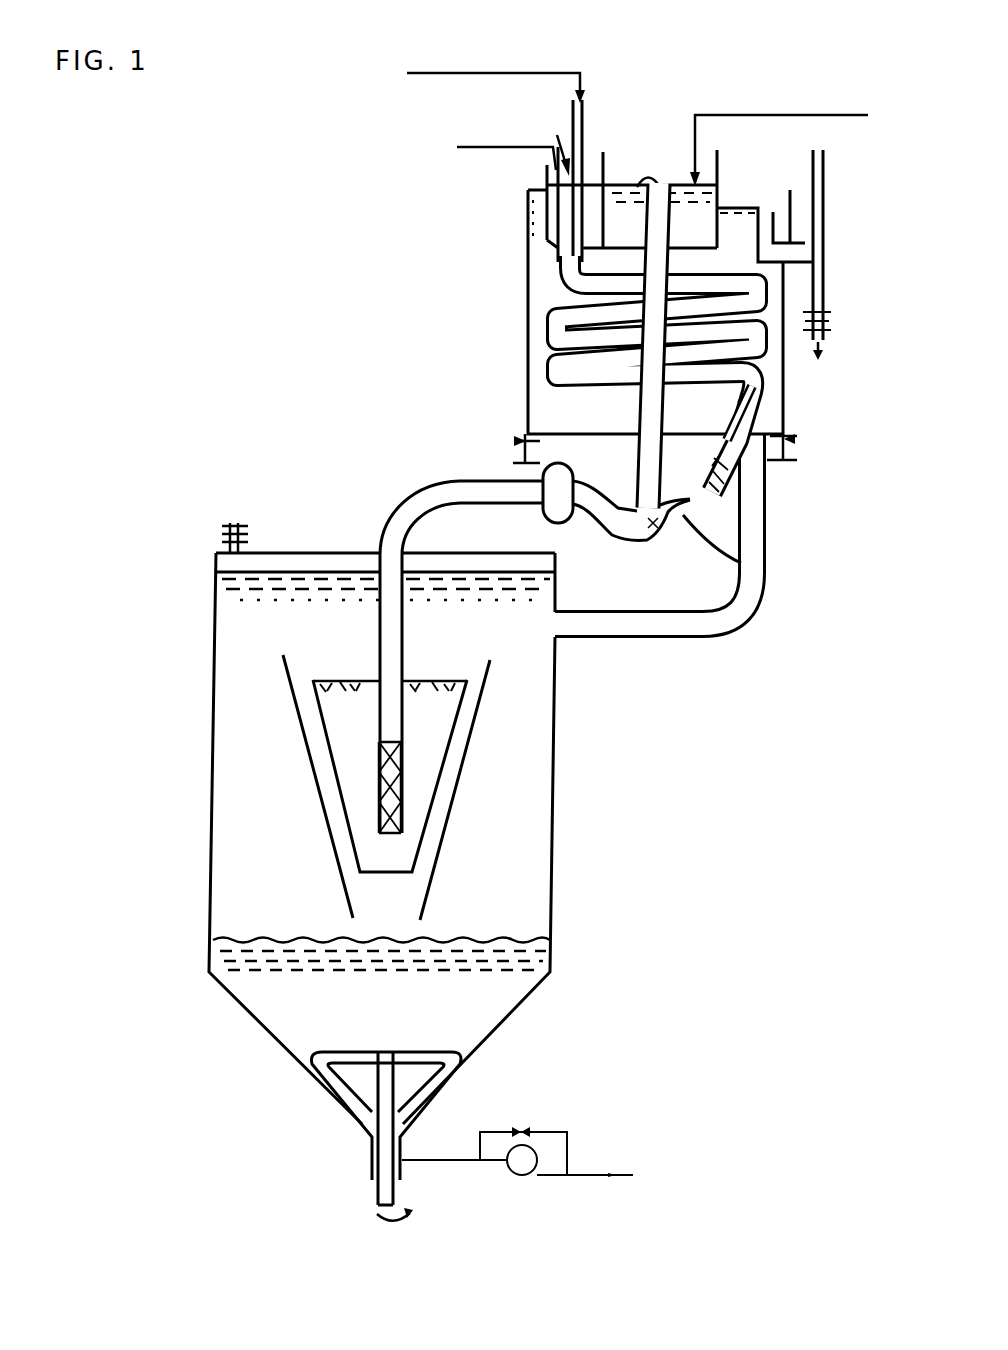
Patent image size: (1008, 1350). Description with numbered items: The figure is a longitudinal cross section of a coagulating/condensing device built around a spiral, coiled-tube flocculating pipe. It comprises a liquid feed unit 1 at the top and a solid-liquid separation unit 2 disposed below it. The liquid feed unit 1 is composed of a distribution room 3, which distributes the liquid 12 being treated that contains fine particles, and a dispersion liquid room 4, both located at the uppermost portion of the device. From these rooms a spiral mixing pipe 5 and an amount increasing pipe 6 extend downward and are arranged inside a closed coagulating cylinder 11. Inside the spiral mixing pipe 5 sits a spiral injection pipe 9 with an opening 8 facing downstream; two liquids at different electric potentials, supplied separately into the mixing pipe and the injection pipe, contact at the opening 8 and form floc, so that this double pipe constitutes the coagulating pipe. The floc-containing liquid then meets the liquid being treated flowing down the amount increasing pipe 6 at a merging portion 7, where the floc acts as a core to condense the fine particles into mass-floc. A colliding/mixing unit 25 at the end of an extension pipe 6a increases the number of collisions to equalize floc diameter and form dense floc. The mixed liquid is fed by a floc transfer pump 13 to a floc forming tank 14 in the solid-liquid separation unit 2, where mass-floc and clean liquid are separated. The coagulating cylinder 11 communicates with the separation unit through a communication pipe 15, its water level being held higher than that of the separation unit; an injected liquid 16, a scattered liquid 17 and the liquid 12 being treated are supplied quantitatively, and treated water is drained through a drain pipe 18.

The liquid feed unit 1 is at (496, 276).
The solid-liquid separation unit 2 is at (165, 656).
The distribution room 3 is at (634, 182).
The dispersion liquid room 4 is at (593, 163).
The spiral mixing pipe 5 is at (547, 313).
The amount increasing pipe 6 is at (647, 402).
The extension pipe 6a is at (407, 547).
The merging portion 7 is at (760, 567).
The opening 8 is at (747, 417).
The spiral injection pipe 9 is at (585, 113).
The coagulating cylinder 11 is at (783, 385).
The liquid being treated 12 is at (820, 115).
The floc transfer pump 13 is at (543, 467).
The floc forming tank 14 is at (443, 785).
The communication pipe 15 is at (703, 627).
The injected liquid 16 is at (533, 72).
The scattered liquid 17 is at (518, 147).
The drain pipe 18 is at (823, 265).
The colliding/mixing unit 25 is at (717, 480).